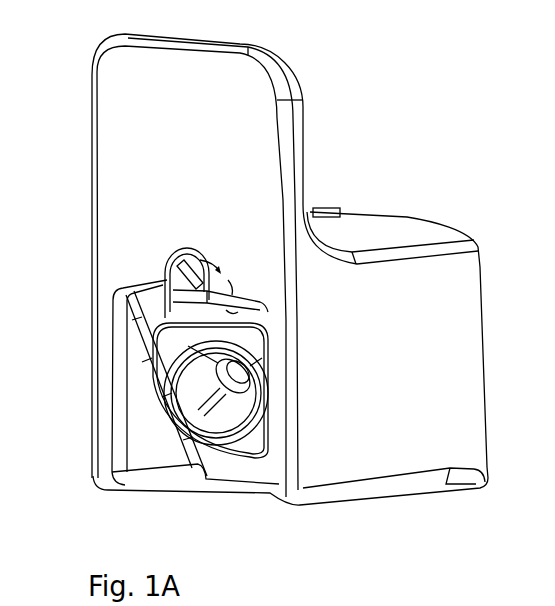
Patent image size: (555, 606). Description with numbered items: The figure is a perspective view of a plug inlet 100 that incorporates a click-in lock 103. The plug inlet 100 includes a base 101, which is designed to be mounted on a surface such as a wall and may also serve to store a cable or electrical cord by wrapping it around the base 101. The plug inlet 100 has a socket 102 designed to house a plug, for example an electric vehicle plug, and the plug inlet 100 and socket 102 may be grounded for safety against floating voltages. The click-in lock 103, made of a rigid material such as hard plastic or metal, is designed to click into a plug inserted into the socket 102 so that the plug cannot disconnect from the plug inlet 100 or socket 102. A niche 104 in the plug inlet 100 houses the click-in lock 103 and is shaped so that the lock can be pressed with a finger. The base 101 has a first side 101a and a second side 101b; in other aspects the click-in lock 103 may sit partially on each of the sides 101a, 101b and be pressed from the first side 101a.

The plug inlet 100 is at (392, 535).
The base 101 is at (391, 376).
The side 101a is at (140, 93).
The side 101b is at (318, 103).
The socket 102 is at (200, 378).
The click-in lock 103 is at (157, 292).
The niche 104 is at (152, 255).